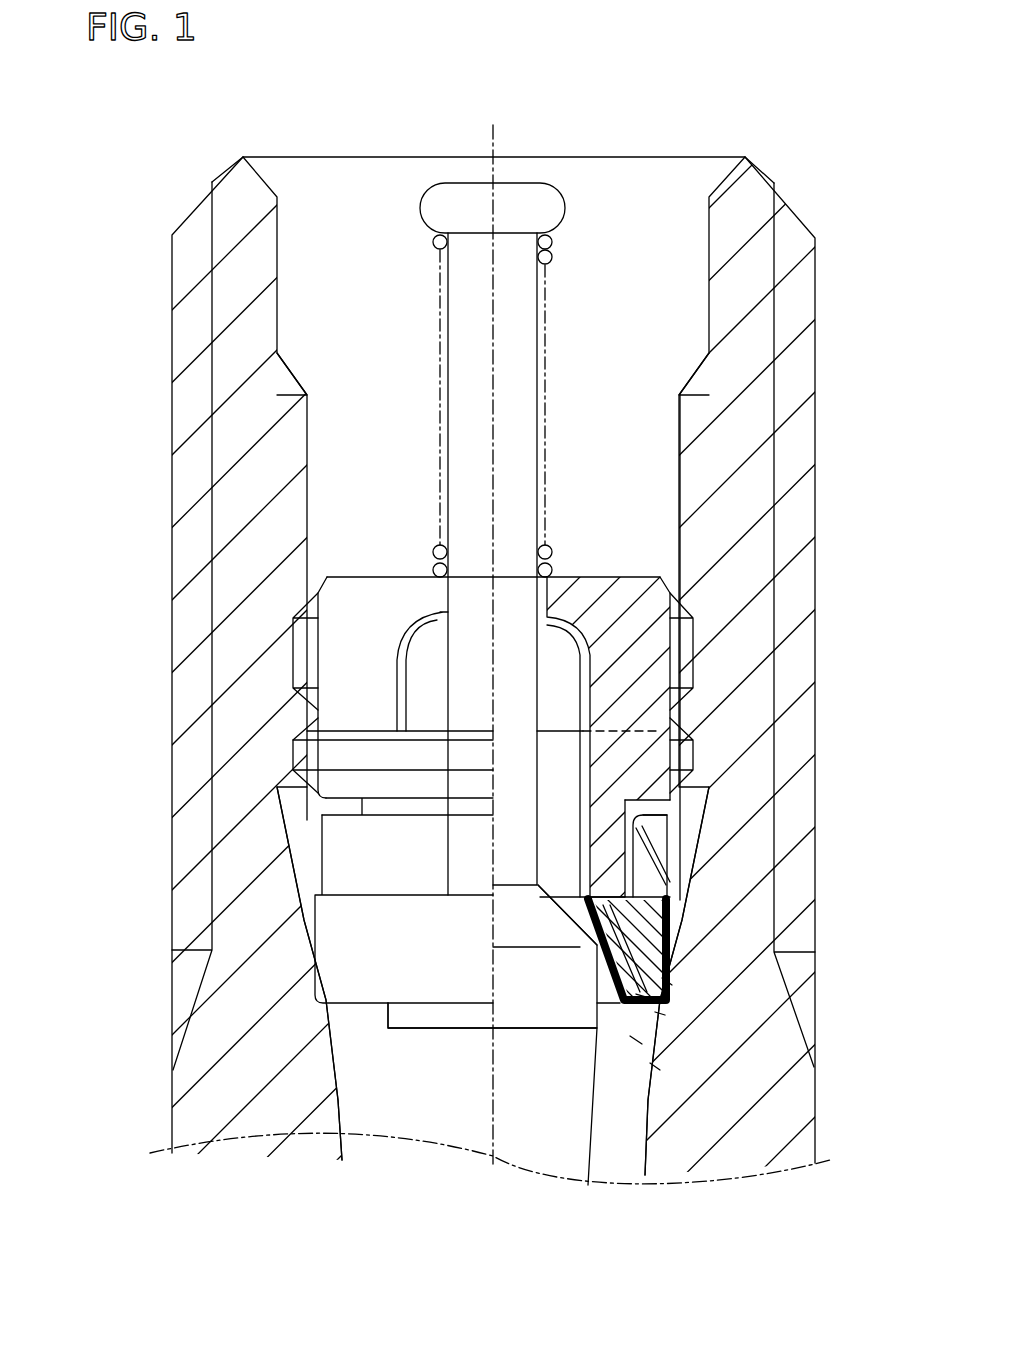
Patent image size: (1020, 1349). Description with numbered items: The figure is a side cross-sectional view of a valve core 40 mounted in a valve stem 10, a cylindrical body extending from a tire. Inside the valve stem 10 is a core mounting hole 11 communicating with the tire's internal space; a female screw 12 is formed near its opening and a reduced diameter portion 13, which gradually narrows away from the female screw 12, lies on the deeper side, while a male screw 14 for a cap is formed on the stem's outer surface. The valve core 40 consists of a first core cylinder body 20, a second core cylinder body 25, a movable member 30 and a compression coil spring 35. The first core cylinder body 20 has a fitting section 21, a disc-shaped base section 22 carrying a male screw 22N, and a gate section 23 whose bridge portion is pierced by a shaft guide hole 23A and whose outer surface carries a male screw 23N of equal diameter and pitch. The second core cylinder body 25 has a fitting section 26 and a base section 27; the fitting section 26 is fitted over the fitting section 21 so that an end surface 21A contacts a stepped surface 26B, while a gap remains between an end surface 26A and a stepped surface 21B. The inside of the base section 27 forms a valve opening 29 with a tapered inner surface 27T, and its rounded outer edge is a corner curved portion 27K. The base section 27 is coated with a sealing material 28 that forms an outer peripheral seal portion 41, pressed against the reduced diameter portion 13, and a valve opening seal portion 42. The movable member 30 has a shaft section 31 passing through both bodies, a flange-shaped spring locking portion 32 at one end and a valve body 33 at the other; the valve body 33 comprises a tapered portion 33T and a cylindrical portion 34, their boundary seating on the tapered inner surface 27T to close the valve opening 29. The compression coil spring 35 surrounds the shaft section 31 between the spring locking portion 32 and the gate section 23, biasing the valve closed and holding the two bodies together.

The valve stem 10 is at (747, 144).
The core mounting hole 11 is at (643, 178).
The female screw 12 is at (688, 418).
The reduced diameter portion 13 is at (770, 1060).
The male screw 14 is at (795, 292).
The first core cylinder body 20 is at (568, 828).
The fitting section 21 is at (612, 828).
The end surface 21A is at (630, 880).
The stepped surface 21B is at (660, 805).
The base section 22 is at (620, 748).
The male screw 22N is at (693, 757).
The gate section 23 is at (640, 615).
The shaft guide hole 23A is at (573, 573).
The male screw 23N is at (688, 647).
The second core cylinder body 25 is at (645, 1022).
The fitting section 26 is at (640, 850).
The end surface 26A is at (633, 830).
The stepped surface 26B is at (640, 913).
The base section 27 is at (640, 948).
The tapered inner surface 27T is at (640, 992).
The corner curved portion 27K is at (640, 1040).
The sealing material 28 is at (657, 1063).
The valve opening 29 is at (605, 1003).
The movable member 30 is at (484, 485).
The shaft section 31 is at (460, 307).
The spring locking portion 32 is at (445, 205).
The valve body 33 is at (585, 1222).
The tapered portion 33T is at (523, 918).
The cylindrical portion 34 is at (566, 1010).
The compression coil spring 35 is at (568, 246).
The valve core 40 is at (379, 1119).
The outer peripheral seal portion 41 is at (660, 1010).
The valve opening seal portion 42 is at (667, 980).